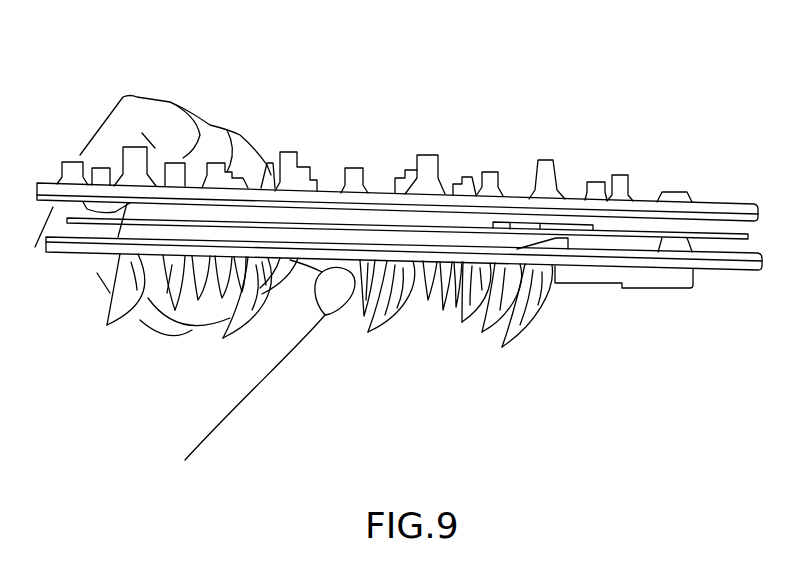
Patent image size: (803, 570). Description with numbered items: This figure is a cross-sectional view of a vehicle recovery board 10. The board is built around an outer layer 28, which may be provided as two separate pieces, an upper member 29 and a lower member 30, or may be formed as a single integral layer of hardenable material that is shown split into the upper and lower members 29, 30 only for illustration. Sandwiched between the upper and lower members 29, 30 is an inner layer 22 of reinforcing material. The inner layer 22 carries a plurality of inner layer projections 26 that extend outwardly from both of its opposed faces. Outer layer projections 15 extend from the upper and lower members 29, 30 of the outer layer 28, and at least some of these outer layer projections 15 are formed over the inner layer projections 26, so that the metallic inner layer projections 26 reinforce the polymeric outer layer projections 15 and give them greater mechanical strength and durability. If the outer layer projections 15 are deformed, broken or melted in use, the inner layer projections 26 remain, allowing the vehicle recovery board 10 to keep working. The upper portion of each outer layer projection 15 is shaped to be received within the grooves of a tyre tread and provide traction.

The vehicle recovery board 10 is at (107, 98).
The outer layer projections 15 is at (347, 172).
The inner layer 22 is at (288, 262).
The inner layer projections 26 is at (420, 233).
The outer layer 28 is at (568, 184).
The upper member 29 is at (663, 210).
The lower member 30 is at (613, 281).